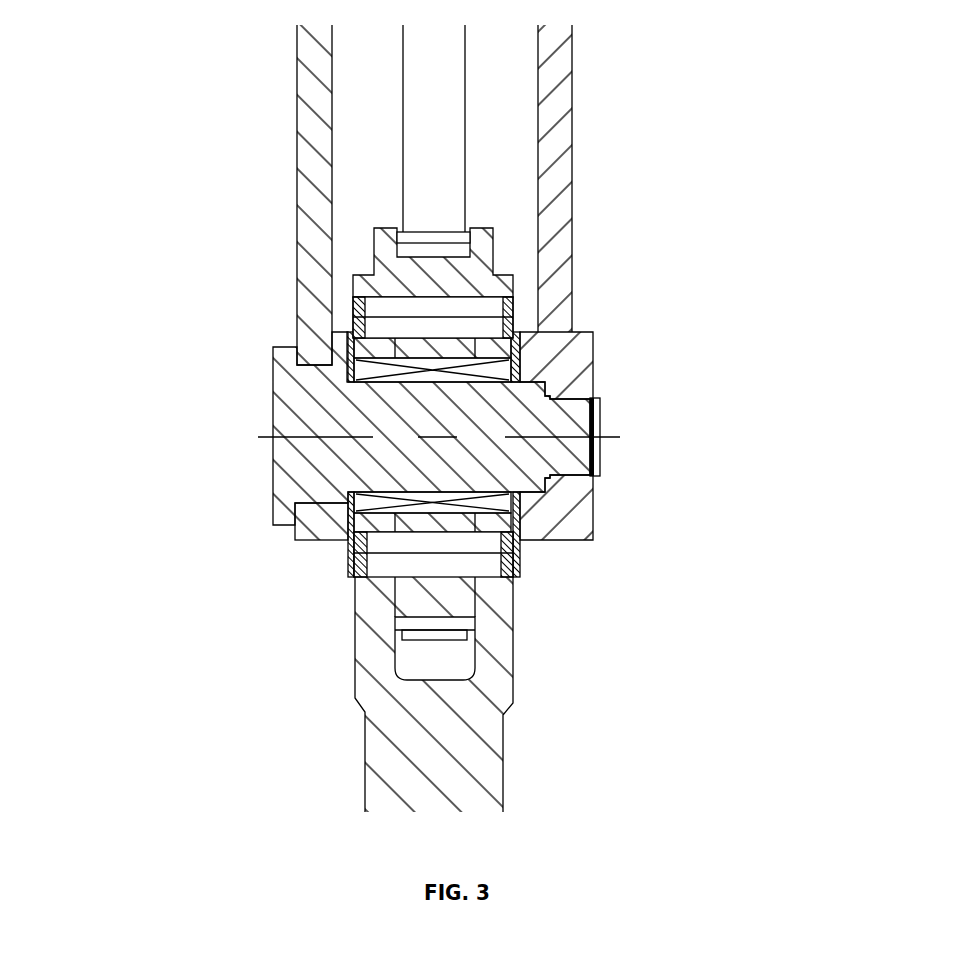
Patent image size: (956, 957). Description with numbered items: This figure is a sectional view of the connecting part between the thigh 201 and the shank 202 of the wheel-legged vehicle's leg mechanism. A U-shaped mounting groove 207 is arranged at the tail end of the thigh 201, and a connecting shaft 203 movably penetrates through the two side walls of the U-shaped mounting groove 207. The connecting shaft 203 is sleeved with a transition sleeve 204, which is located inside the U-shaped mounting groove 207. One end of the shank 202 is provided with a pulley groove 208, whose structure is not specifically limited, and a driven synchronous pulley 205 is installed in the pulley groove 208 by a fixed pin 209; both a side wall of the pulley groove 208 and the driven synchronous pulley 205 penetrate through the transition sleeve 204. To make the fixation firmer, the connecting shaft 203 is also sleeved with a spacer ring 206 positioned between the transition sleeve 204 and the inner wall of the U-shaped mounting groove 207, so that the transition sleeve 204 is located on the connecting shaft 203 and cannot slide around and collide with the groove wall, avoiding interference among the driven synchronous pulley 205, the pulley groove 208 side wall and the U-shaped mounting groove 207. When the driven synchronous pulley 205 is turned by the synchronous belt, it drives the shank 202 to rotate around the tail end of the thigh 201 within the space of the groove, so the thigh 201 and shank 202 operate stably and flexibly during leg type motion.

The thigh 201 is at (297, 148).
The shank 202 is at (353, 683).
The connecting shaft 203 is at (297, 412).
The transition sleeve 204 is at (520, 327).
The driven synchronous pulley 205 is at (427, 283).
The spacer ring 206 is at (520, 373).
The U-shaped mounting groove 207 is at (527, 88).
The pulley groove 208 is at (467, 230).
The fixed pin 209 is at (358, 312).